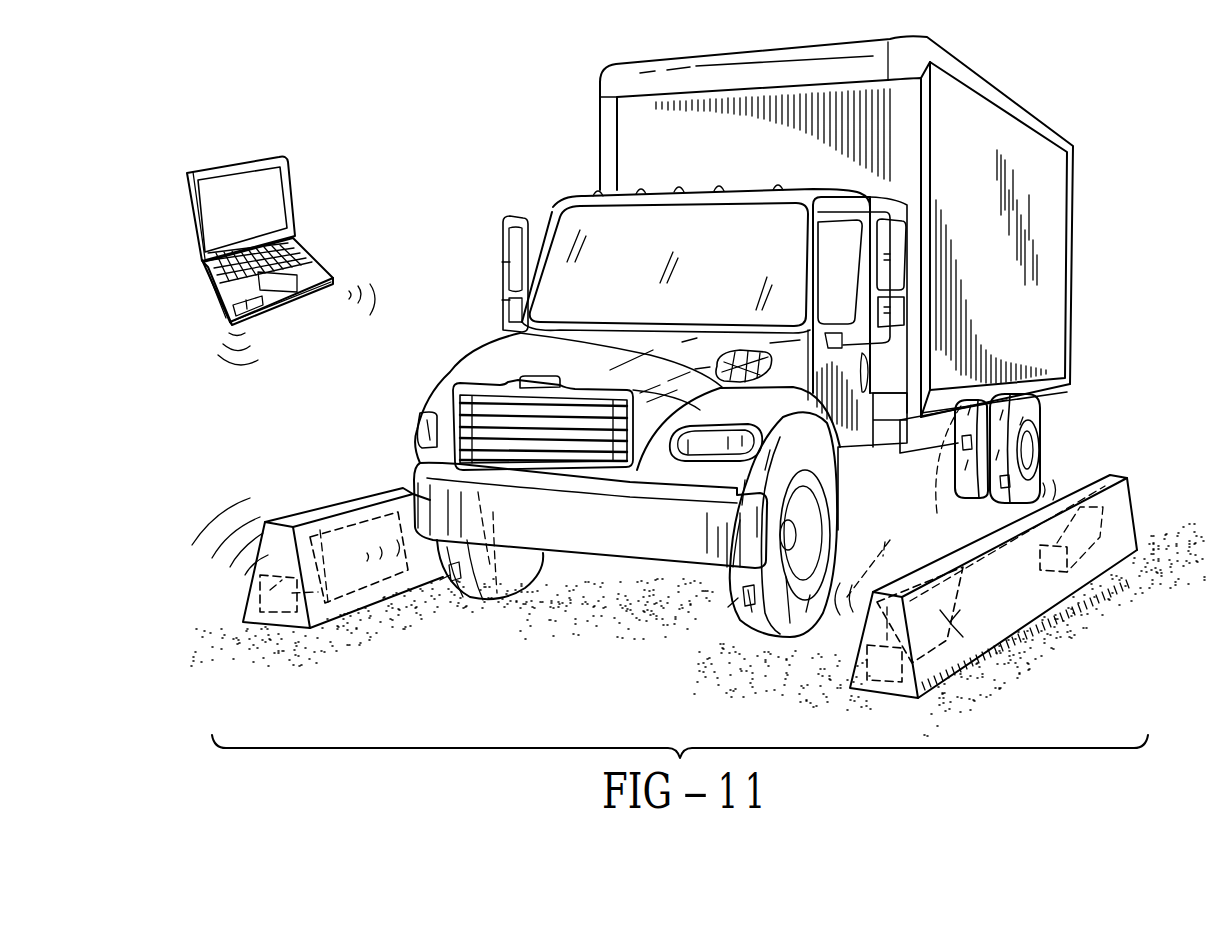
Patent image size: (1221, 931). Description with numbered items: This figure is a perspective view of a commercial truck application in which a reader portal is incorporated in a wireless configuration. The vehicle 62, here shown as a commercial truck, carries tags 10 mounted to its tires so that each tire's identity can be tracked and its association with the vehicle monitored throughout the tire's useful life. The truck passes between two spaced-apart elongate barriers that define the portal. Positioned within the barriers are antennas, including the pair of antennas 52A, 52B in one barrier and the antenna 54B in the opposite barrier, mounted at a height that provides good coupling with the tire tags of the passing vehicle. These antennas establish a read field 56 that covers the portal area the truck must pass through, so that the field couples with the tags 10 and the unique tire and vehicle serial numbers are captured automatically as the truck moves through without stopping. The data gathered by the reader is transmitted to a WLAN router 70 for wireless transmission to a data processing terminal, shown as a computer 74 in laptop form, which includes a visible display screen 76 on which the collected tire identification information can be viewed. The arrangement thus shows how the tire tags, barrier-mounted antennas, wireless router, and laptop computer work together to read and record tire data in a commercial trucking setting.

The tag 10 is at (445, 577).
The antenna 52A is at (1113, 505).
The antenna 52B is at (987, 643).
The antenna 54B is at (347, 537).
The read field 56 is at (945, 515).
The car 62 is at (1015, 98).
The WLAN router 70 is at (267, 593).
The computer 74 is at (317, 285).
The display screen 76 is at (268, 194).